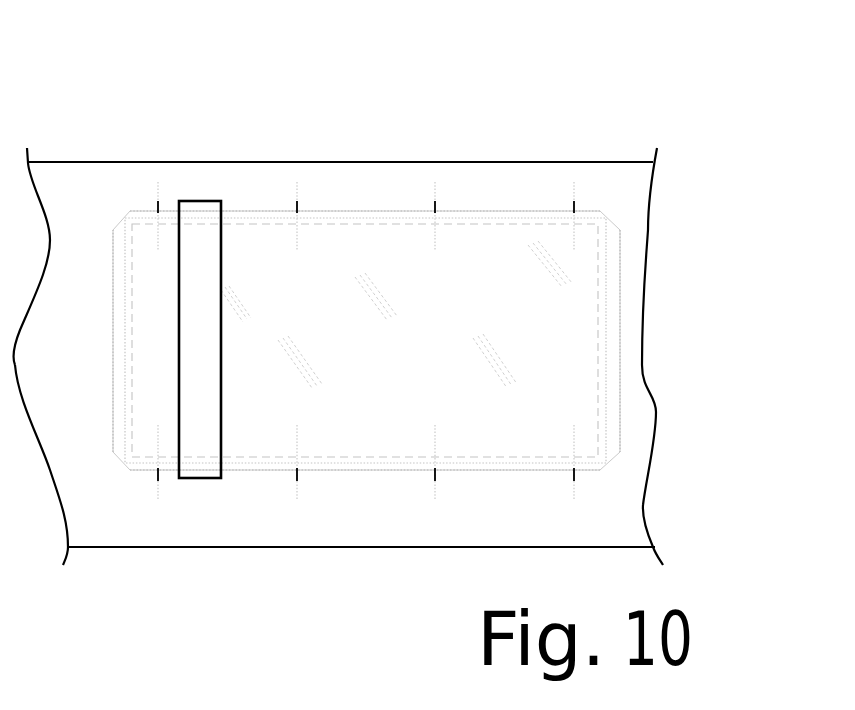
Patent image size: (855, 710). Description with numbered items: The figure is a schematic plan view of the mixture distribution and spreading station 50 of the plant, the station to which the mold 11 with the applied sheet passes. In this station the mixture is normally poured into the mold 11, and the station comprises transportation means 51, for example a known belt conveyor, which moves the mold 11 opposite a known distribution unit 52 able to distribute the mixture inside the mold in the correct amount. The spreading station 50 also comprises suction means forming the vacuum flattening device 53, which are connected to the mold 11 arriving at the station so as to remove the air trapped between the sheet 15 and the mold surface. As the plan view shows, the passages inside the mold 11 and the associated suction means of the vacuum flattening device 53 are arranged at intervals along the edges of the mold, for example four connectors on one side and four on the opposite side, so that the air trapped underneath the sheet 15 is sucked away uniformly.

The mixture distribution and spreading station 50 is at (604, 101).
The transportation means 51 is at (163, 530).
The mold 11 is at (352, 193).
The sheet 15 is at (487, 250).
The distribution unit 52 is at (197, 218).
The vacuum flattening device 53 is at (600, 200).